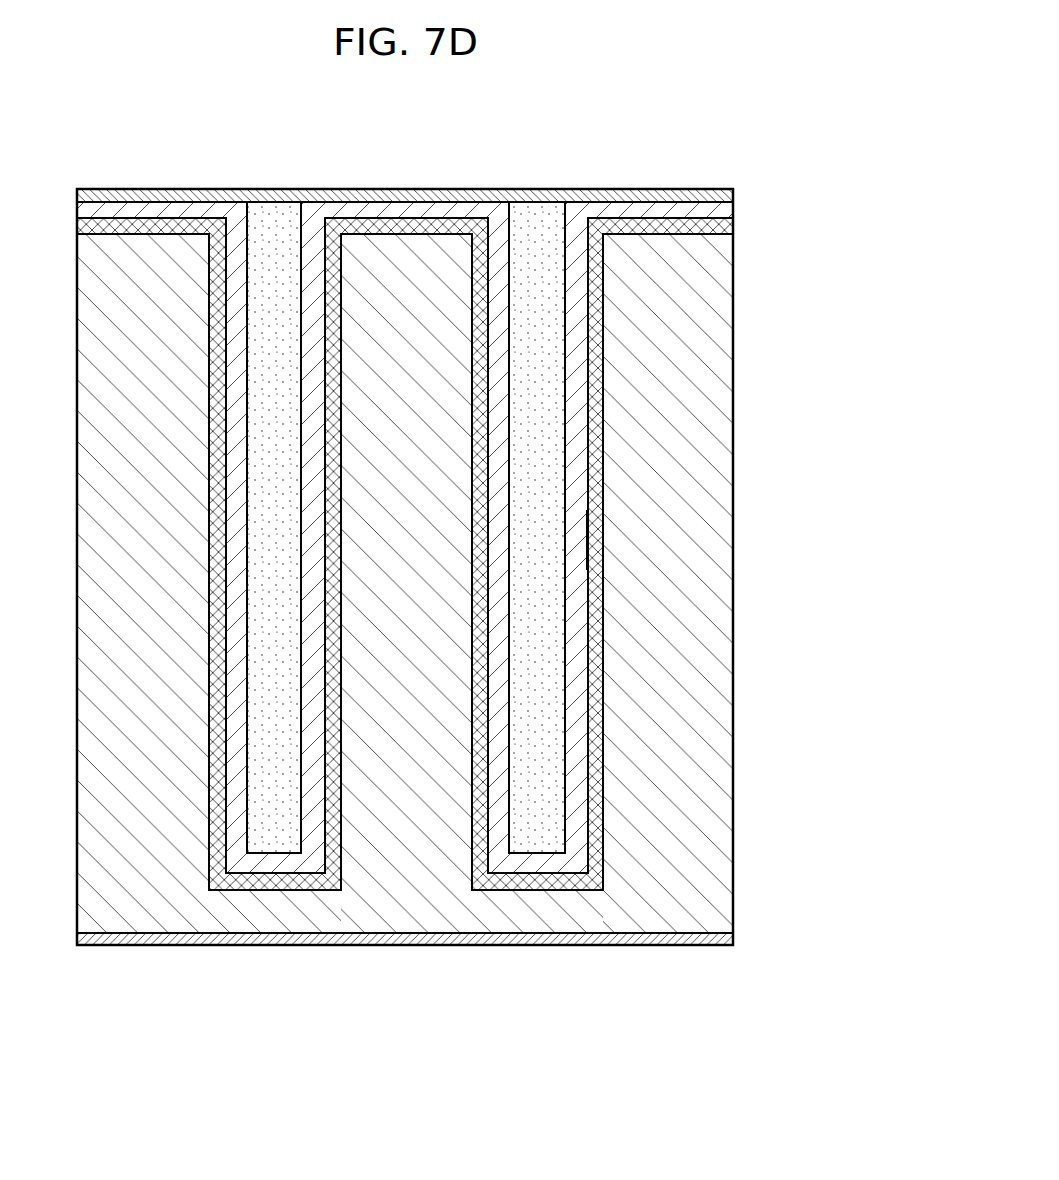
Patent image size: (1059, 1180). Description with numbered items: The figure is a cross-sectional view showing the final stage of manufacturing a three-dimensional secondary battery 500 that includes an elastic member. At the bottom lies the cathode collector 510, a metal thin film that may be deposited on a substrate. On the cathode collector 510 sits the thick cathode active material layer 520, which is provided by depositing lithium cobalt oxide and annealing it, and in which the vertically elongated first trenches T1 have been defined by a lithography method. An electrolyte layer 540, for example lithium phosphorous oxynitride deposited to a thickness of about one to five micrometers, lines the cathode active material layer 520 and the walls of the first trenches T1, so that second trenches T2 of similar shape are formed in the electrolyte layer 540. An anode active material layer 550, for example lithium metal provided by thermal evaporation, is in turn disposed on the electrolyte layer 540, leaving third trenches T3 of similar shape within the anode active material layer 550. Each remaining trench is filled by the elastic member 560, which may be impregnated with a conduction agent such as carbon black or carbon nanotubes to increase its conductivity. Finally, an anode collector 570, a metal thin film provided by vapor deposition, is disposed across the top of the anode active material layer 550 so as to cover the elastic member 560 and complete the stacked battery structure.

The 3D secondary battery 500 is at (452, 559).
The cathode collector 510 is at (728, 942).
The cathode active material layer 520 is at (720, 805).
The electrolyte layer 540 is at (731, 229).
The anode active material layer 550 is at (731, 210).
The elastic member 560 is at (538, 838).
The anode collector 570 is at (733, 194).
The first trenches T1 is at (603, 602).
The second trenches T2 is at (587, 537).
The third trenches T3 is at (565, 468).